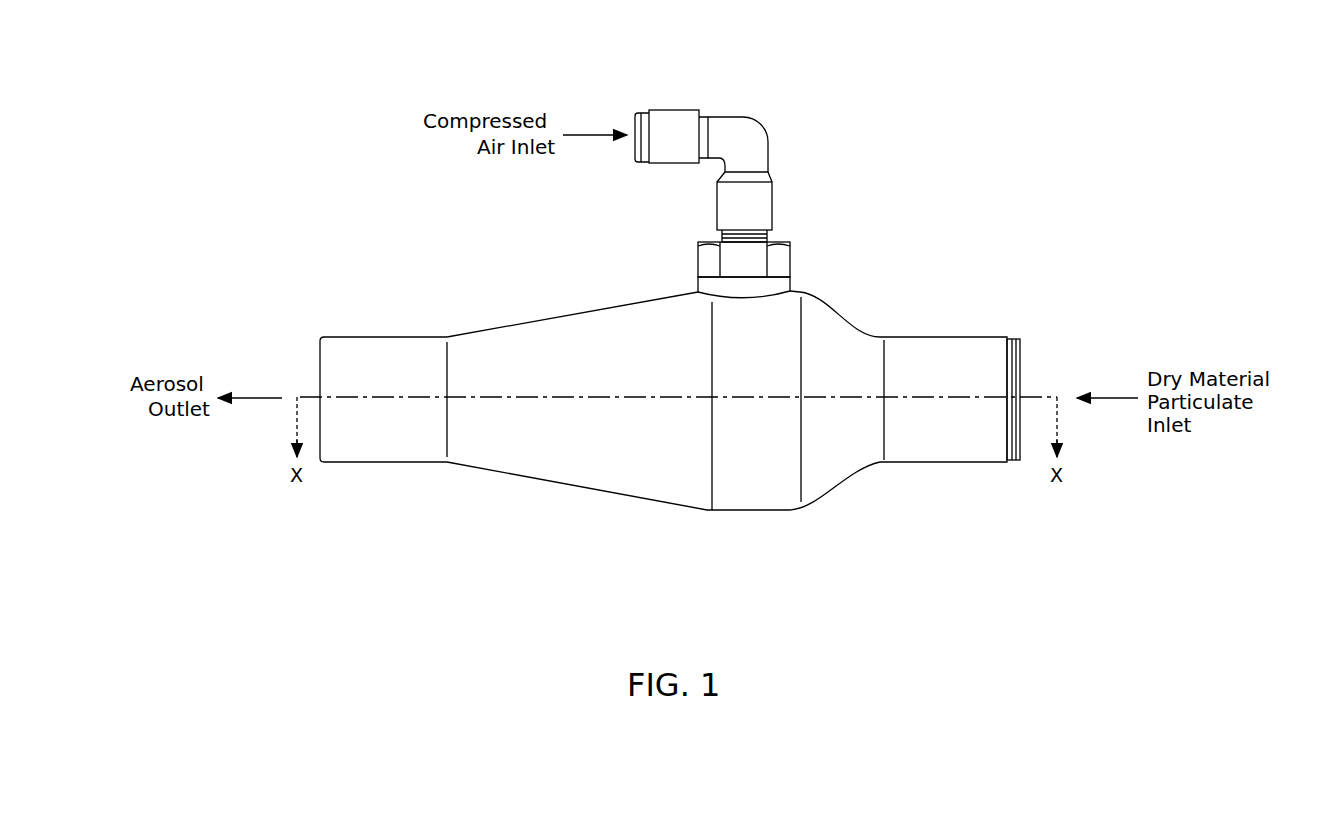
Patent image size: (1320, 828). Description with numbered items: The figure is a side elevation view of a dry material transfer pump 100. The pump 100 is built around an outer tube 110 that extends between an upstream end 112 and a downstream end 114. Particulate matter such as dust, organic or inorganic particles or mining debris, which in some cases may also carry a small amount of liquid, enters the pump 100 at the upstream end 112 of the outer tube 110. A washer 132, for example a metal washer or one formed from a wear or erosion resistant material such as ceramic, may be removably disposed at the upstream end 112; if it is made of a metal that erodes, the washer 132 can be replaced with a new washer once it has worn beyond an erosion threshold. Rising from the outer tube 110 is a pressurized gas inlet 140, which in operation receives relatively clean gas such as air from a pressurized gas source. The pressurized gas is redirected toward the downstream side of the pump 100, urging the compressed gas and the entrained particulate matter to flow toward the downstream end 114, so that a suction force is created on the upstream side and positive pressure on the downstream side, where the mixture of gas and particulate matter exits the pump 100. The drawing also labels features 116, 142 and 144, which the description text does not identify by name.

The pump 100 is at (955, 165).
The outer tube 110 is at (867, 325).
The upstream end 112 is at (963, 450).
The downstream end 114 is at (385, 447).
The central mixing section 116 is at (732, 495).
The washer 132 is at (1015, 352).
The pressurized gas inlet 140 is at (763, 288).
The elbow connector 142 is at (673, 127).
The threaded fitting nut 144 is at (777, 252).